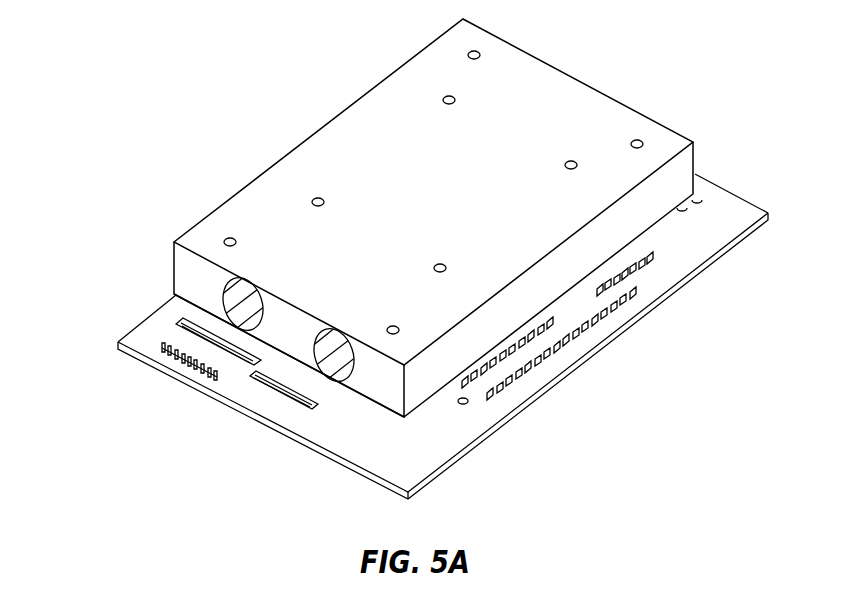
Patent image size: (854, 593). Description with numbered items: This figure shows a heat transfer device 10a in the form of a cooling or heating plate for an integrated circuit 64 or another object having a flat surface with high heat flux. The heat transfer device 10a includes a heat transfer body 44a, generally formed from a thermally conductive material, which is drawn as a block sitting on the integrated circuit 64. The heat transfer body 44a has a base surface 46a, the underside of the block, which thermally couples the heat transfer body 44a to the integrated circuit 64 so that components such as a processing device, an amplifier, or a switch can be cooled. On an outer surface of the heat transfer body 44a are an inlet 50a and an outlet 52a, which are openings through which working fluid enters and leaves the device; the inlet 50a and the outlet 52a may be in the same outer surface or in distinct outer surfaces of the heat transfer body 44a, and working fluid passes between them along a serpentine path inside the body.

The heat transfer device 10a is at (258, 76).
The heat transfer body 44a is at (228, 200).
The base surface 46a is at (387, 408).
The inlet 50a is at (243, 305).
The outlet 52a is at (338, 360).
The integrated circuit 64 is at (677, 255).